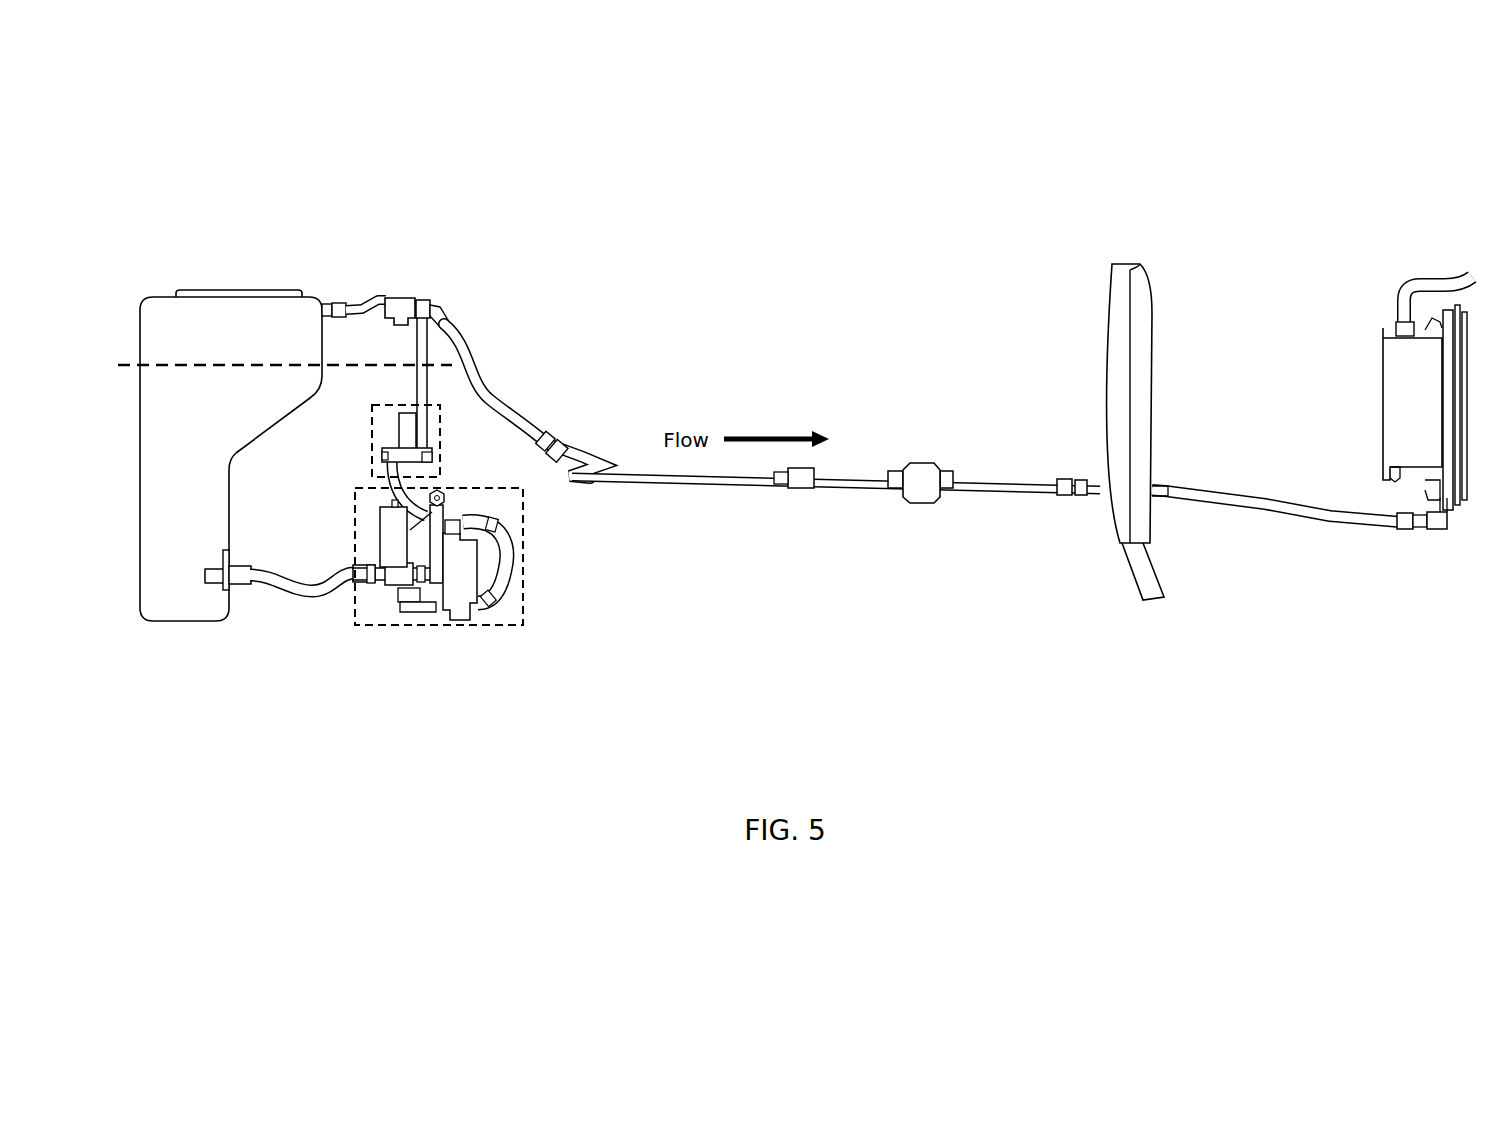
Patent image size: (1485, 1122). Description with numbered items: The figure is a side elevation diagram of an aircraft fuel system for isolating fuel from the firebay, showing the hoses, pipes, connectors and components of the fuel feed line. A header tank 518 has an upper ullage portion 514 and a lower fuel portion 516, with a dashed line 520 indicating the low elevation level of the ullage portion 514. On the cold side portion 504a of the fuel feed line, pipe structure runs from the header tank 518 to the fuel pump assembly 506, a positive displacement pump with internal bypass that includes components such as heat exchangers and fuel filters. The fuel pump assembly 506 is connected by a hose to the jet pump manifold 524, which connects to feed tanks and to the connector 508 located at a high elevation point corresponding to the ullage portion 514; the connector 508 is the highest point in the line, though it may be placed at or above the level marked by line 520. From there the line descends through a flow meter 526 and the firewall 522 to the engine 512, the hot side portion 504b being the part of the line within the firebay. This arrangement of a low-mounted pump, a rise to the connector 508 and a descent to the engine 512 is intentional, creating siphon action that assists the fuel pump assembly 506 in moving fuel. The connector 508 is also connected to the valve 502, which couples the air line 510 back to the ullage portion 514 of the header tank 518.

The valve 502 is at (401, 297).
The cold side portion of the fuel feed line 504a is at (512, 401).
The hot side portion of the fuel feed line 504b is at (1278, 500).
The fuel pump assembly 506 is at (411, 626).
The connector 508 is at (430, 299).
The air line 510 is at (357, 302).
The engine 512 is at (1381, 330).
The ullage portion 514 is at (231, 375).
The fuel portion 516 is at (190, 465).
The header tank 518 is at (219, 288).
The line indicating low elevation level of the ullage portion 520 is at (159, 363).
The firewall 522 is at (1131, 262).
The jet pump manifold 524 is at (447, 433).
The flow meter 526 is at (924, 461).